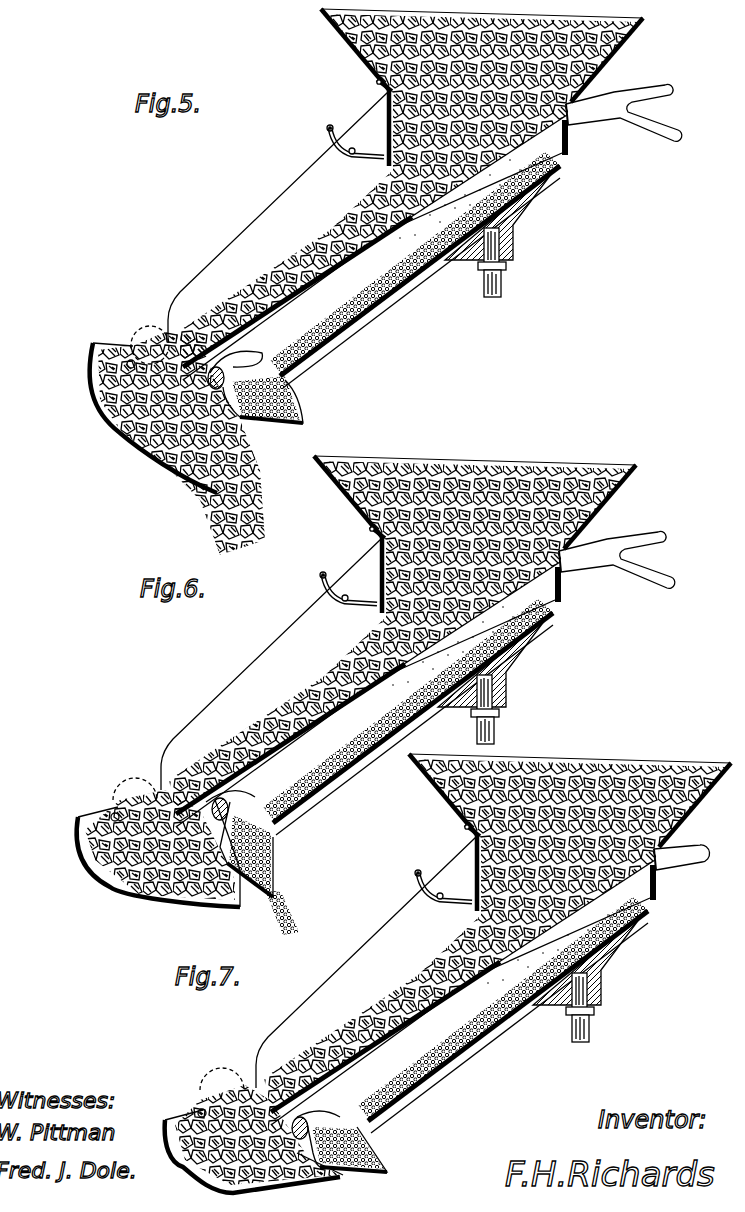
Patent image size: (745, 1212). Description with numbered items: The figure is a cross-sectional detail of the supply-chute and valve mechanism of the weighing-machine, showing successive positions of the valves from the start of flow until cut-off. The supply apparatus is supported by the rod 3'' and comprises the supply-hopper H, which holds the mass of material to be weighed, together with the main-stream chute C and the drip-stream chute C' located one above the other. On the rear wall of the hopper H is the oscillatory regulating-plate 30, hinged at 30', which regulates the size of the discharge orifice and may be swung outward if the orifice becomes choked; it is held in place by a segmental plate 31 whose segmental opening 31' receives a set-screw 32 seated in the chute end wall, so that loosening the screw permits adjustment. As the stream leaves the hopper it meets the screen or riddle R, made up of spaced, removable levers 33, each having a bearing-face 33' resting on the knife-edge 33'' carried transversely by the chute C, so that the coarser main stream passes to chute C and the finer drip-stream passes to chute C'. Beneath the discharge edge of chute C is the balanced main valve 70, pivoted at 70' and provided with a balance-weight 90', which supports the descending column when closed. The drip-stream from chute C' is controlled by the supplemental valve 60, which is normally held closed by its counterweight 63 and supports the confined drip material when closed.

In FIG. 5, the supply-hopper H is at (640, 20).
In FIG. 6, the supply-hopper H is at (475, 555).
In FIG. 7, the supply-hopper H is at (570, 854).
In FIG. 5, the regulating-plate 30 is at (373, 128).
In FIG. 6, the regulating-plate 30 is at (366, 575).
In FIG. 7, the regulating-plate 30 is at (461, 873).
In FIG. 5, the hinge 30' is at (365, 78).
In FIG. 6, the hinge 30' is at (358, 525).
In FIG. 7, the hinge 30' is at (453, 823).
In FIG. 5, the segmental plate 31 is at (342, 135).
In FIG. 6, the segmental plate 31 is at (335, 582).
In FIG. 7, the segmental plate 31 is at (430, 880).
In FIG. 5, the segmental opening 31' is at (314, 138).
In FIG. 6, the segmental opening 31' is at (307, 585).
In FIG. 7, the segmental opening 31' is at (402, 883).
In FIG. 5, the set-screw 32 is at (350, 154).
In FIG. 6, the set-screw 32 is at (331, 607).
In FIG. 7, the set-screw 32 is at (426, 905).
In FIG. 5, the lever 33 is at (624, 112).
In FIG. 6, the lever 33 is at (617, 559).
In FIG. 7, the lever 33 is at (682, 849).
In FIG. 5, the bearing-face 33' is at (578, 114).
In FIG. 6, the bearing-face 33' is at (571, 561).
In FIG. 7, the bearing-face 33' is at (666, 859).
In FIG. 5, the knife-edge 33'' is at (582, 137).
In FIG. 6, the knife-edge 33'' is at (575, 584).
In FIG. 7, the knife-edge 33'' is at (670, 882).
In FIG. 5, the screen or riddle R is at (617, 146).
In FIG. 6, the screen or riddle R is at (610, 593).
In FIG. 7, the screen or riddle R is at (705, 879).
In FIG. 5, the rod 3'' is at (505, 262).
In FIG. 6, the rod 3'' is at (498, 709).
In FIG. 7, the rod 3'' is at (593, 1007).
In FIG. 5, the main-stream chute C is at (371, 247).
In FIG. 6, the main-stream chute C is at (364, 694).
In FIG. 7, the main-stream chute C is at (459, 992).
In FIG. 5, the drip-stream chute C' is at (415, 270).
In FIG. 6, the drip-stream chute C' is at (408, 717).
In FIG. 7, the drip-stream chute C' is at (503, 1015).
In FIG. 5, the balance-weight 90' is at (148, 335).
In FIG. 6, the balance-weight 90' is at (135, 777).
In FIG. 7, the balance-weight 90' is at (222, 1070).
In FIG. 5, the pivot 70' is at (122, 364).
In FIG. 6, the pivot 70' is at (98, 805).
In FIG. 7, the pivot 70' is at (188, 1102).
In FIG. 5, the main valve 70 is at (166, 442).
In FIG. 6, the main valve 70 is at (141, 848).
In FIG. 7, the main valve 70 is at (245, 1139).
In FIG. 5, the counterweight 63 is at (213, 387).
In FIG. 6, the counterweight 63 is at (209, 814).
In FIG. 7, the counterweight 63 is at (302, 1118).
In FIG. 5, the supplemental valve 60 is at (292, 398).
In FIG. 6, the supplemental valve 60 is at (257, 863).
In FIG. 7, the supplemental valve 60 is at (347, 1141).